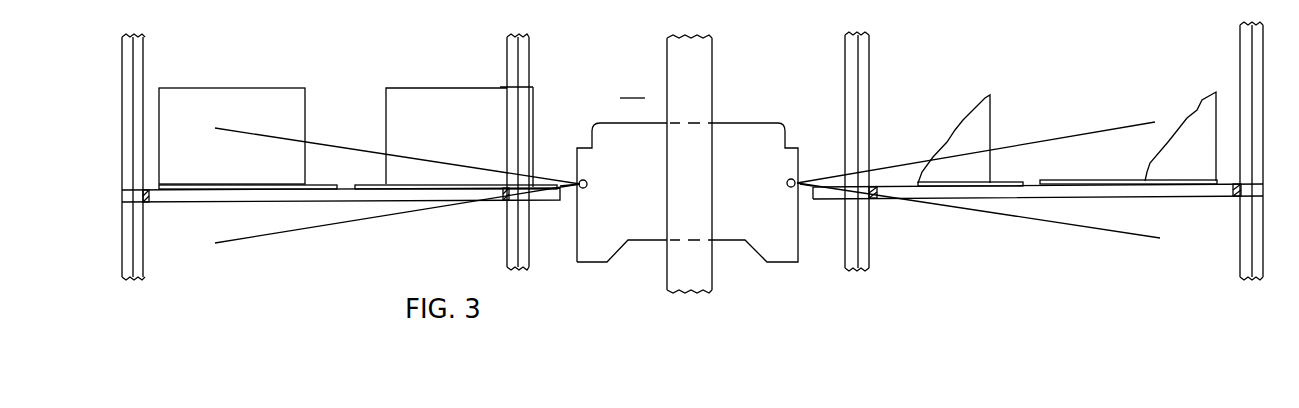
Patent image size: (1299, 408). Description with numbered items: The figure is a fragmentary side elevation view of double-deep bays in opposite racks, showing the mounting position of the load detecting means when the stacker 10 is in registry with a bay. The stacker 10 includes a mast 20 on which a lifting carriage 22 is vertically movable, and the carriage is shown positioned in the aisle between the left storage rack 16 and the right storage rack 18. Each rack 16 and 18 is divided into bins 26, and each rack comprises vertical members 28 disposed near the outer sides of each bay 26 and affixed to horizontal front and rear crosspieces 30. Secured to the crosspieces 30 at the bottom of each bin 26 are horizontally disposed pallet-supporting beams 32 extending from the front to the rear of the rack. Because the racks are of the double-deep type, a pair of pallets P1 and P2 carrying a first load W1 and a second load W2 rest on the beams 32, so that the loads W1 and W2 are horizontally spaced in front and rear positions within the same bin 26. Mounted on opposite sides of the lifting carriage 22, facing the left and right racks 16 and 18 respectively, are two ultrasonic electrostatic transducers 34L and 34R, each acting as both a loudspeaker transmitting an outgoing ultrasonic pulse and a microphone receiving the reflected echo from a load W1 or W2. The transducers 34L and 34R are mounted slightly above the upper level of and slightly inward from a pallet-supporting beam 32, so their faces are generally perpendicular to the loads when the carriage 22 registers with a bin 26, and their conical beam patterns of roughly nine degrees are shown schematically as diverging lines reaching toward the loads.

The stacker 10 is at (635, 86).
The left storage rack 16 is at (535, 50).
The right storage rack 18 is at (843, 56).
The mast 20 is at (706, 67).
The lifting carriage 22 is at (768, 128).
The bin 26 is at (338, 70).
The vertical member 28 is at (137, 56).
The crosspiece 30 is at (148, 196).
The pallet-supporting beam 32 is at (245, 196).
The ultrasonic electrostatic transducer 34L is at (586, 188).
The ultrasonic electrostatic transducer 34R is at (787, 182).
The first load W1 is at (688, 136).
The second load W2 is at (687, 136).
The pallet P1 is at (462, 183).
The pallet P2 is at (317, 183).